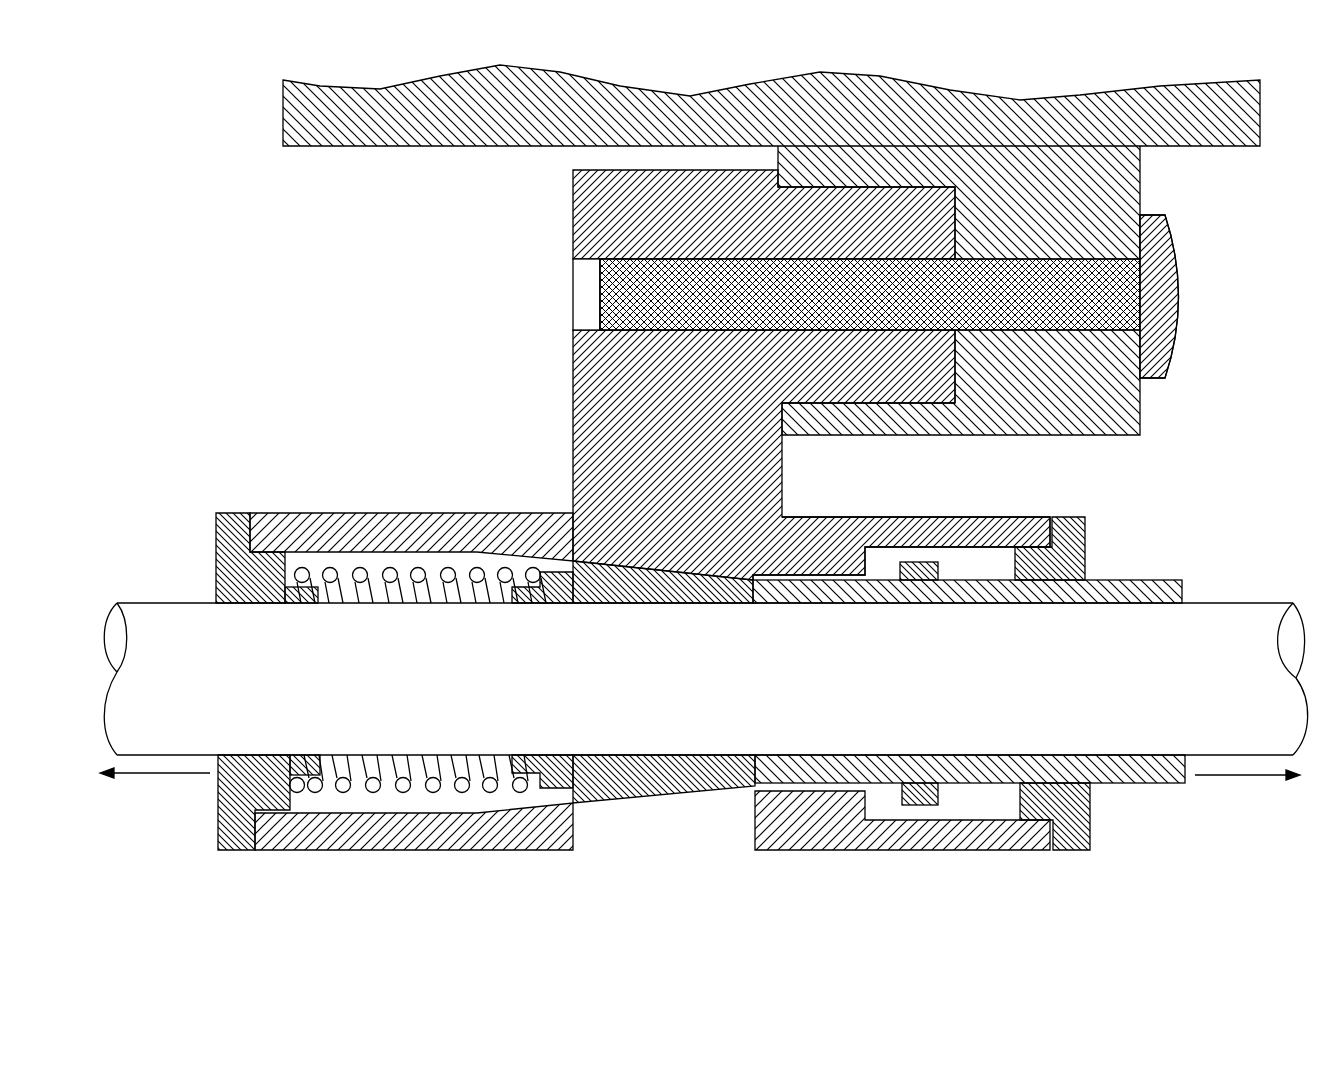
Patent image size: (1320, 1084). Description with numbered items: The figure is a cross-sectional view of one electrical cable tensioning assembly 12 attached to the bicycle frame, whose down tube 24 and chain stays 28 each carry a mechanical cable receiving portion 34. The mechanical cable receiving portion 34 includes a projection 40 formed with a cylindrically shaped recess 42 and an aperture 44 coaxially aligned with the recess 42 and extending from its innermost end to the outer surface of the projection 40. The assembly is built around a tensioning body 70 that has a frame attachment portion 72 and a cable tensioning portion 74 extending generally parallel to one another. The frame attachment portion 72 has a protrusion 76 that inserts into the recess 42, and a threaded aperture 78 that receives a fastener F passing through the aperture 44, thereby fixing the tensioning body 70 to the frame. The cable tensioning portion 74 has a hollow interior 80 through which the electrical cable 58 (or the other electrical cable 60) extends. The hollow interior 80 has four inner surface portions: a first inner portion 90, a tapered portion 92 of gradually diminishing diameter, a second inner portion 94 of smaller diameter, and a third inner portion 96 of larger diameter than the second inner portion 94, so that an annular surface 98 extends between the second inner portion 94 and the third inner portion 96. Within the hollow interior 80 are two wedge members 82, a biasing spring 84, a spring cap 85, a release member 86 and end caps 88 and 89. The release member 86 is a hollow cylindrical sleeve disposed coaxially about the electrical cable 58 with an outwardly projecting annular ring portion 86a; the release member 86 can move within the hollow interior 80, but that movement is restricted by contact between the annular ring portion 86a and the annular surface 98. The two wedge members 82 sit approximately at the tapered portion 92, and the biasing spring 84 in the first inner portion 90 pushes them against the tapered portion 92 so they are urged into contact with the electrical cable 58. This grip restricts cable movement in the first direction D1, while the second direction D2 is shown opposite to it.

The electrical cable tensioning assembly 12 is at (386, 385).
The down tube 24 is at (383, 123).
The chain stays 28 is at (771, 138).
The mechanical cable receiving portion 34 is at (1110, 205).
The projection 40 is at (1105, 418).
The recess 42 is at (867, 405).
The aperture 44 is at (1100, 310).
The fastener F is at (942, 296).
The electrical cable 58 is at (1230, 655).
The electrical cable 60 is at (705, 639).
The tensioning body 70 is at (500, 373).
The frame attachment portion 72 is at (590, 352).
The cable tensioning portion 74 is at (522, 527).
The protrusion 76 is at (806, 372).
The threaded aperture 78 is at (573, 268).
The hollow interior 80 is at (418, 744).
The wedge members 82 is at (752, 550).
The biasing spring 84 is at (409, 837).
The spring cap 85 is at (550, 803).
The release member 86 is at (987, 748).
The annular ring portion 86a is at (920, 800).
The end cap 88 is at (232, 833).
The end cap 89 is at (1090, 850).
The first inner portion 90 is at (318, 797).
The tapered portion 92 is at (556, 803).
The second inner portion 94 is at (850, 788).
The third inner portion 96 is at (970, 810).
The annular surface 98 is at (870, 810).
The first direction D1 is at (1247, 789).
The second direction D2 is at (155, 786).